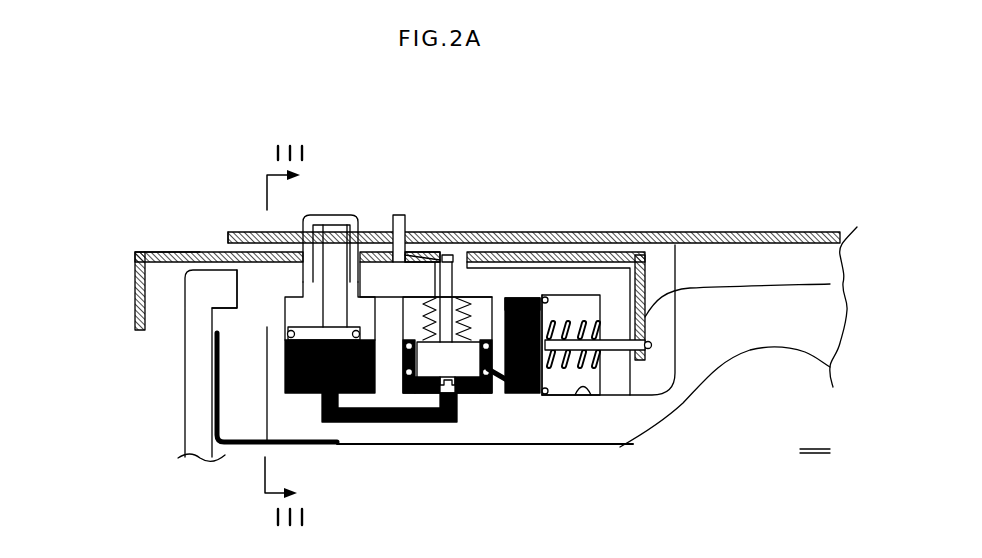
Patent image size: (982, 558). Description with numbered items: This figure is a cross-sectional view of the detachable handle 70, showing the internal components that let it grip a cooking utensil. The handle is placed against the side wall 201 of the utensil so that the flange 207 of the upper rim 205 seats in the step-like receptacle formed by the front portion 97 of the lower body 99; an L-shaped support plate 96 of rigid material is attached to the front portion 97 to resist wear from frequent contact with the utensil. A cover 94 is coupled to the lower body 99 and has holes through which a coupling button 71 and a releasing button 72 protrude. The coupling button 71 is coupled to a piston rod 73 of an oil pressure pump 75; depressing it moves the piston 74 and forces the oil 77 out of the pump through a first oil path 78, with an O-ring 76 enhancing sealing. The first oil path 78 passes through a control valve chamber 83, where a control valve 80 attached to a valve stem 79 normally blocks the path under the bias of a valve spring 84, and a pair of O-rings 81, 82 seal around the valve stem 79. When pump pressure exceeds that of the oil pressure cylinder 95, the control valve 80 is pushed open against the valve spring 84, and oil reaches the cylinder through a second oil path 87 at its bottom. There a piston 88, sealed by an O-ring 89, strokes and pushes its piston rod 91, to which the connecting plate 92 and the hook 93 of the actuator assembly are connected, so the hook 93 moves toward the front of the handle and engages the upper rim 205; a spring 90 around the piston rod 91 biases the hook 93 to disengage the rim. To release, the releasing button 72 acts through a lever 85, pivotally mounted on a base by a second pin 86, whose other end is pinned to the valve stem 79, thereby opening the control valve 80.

The detachable handle 70 is at (815, 438).
The coupling button 71 is at (320, 215).
The releasing button 72 is at (400, 215).
The piston rod 73 is at (230, 280).
The piston 74 is at (312, 336).
The oil pressure pump 75 is at (200, 280).
The O-ring 76 is at (290, 336).
The oil 77 is at (343, 348).
The first oil path 78 is at (375, 417).
The valve stem 79 is at (430, 357).
The control valve 80 is at (460, 392).
The O-ring 81 is at (470, 383).
The O-ring 82 is at (513, 362).
The control valve chamber 83 is at (417, 294).
The valve spring 84 is at (458, 337).
The lever 85 is at (447, 256).
The second pin 86 is at (425, 252).
The second oil path 87 is at (507, 312).
The piston 88 is at (560, 327).
The O-ring 89 is at (541, 312).
The spring 90 is at (570, 328).
The piston rod 91 is at (645, 312).
The connecting plate 92 is at (830, 284).
The hook 93 is at (133, 265).
The cover 94 is at (755, 243).
The oil pressure cylinder 95 is at (577, 382).
The support plate 96 is at (248, 446).
The front portion 97 is at (267, 328).
The lower body 99 is at (820, 320).
The side wall 201 is at (195, 423).
The upper rim 205 is at (160, 252).
The flange 207 is at (230, 232).